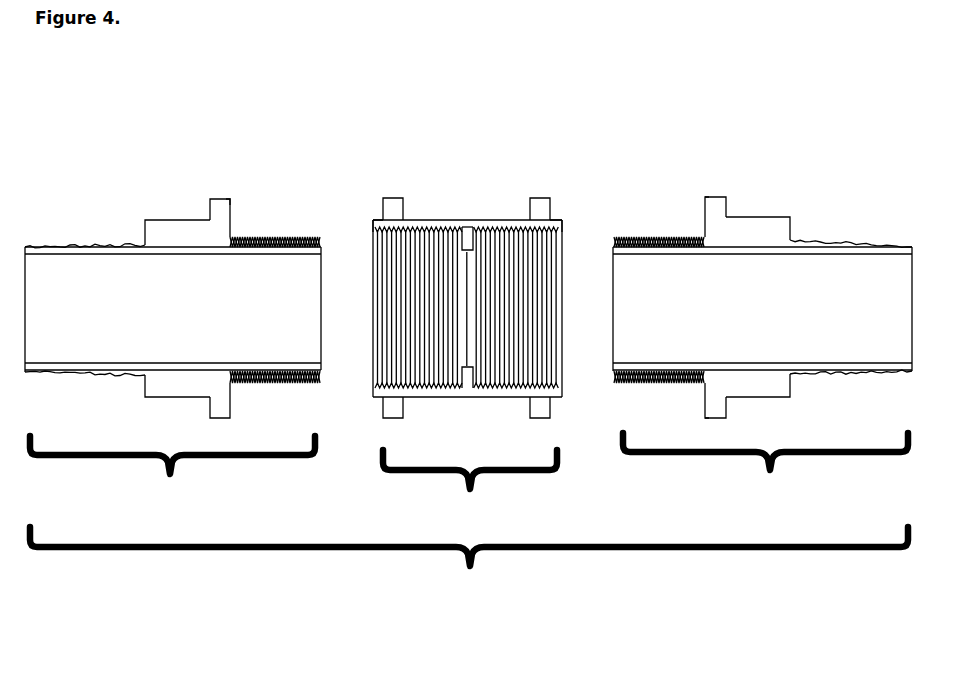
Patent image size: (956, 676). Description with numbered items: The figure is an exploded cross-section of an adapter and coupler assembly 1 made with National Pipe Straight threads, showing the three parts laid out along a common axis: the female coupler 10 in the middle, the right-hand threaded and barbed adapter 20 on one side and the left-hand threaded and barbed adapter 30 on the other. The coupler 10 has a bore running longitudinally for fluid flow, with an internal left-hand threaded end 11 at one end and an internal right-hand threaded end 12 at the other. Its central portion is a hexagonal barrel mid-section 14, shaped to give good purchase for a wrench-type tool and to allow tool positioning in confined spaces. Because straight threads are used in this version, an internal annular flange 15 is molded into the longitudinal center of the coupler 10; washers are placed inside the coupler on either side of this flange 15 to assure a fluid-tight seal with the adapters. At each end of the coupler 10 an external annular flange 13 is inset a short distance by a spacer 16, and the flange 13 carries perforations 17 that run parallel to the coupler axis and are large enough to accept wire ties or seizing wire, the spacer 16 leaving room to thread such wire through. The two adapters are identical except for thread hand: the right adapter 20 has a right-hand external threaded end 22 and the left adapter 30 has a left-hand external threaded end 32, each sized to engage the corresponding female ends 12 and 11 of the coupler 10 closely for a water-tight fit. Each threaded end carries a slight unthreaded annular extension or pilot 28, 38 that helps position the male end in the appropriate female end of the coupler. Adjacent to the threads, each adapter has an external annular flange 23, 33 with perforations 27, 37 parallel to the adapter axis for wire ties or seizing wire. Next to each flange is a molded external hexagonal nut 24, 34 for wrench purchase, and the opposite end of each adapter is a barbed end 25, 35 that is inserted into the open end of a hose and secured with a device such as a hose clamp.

The adapter and coupler assembly 1 is at (468, 338).
The female coupler 10 is at (467, 301).
The internal left-hand threaded end 11 is at (563, 250).
The internal right-hand threaded end 12 is at (372, 250).
The external annular flange 13 is at (393, 197).
The hexagonal barrel mid-section 14 is at (467, 219).
The internal annular flange 15 is at (462, 224).
The spacer 16 is at (372, 218).
The perforations 17 is at (380, 201).
The right-hand threaded and barbed adapter 20 is at (173, 326).
The right-hand external threaded end 22 is at (275, 236).
The external annular flange 23 is at (218, 198).
The external hexagonal nut 24 is at (181, 219).
The barbed end 25 is at (100, 244).
The perforations 27 is at (233, 200).
The pilot 28 is at (316, 236).
The left-hand threaded and barbed adapter 30 is at (762, 322).
The left-hand external threaded end 32 is at (659, 236).
The external annular flange 33 is at (714, 196).
The external hexagonal nut 34 is at (760, 217).
The barbed end 35 is at (838, 239).
The perforations 37 is at (702, 200).
The pilot 38 is at (615, 236).